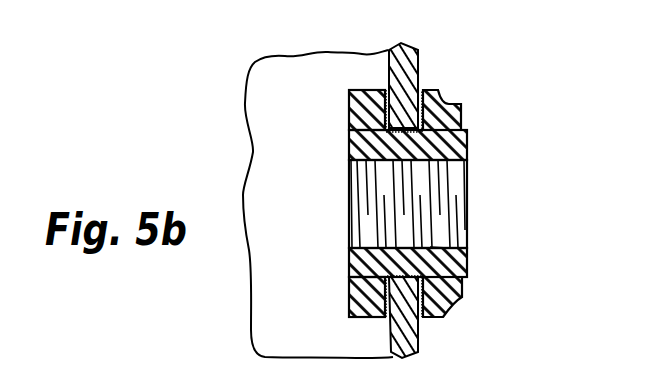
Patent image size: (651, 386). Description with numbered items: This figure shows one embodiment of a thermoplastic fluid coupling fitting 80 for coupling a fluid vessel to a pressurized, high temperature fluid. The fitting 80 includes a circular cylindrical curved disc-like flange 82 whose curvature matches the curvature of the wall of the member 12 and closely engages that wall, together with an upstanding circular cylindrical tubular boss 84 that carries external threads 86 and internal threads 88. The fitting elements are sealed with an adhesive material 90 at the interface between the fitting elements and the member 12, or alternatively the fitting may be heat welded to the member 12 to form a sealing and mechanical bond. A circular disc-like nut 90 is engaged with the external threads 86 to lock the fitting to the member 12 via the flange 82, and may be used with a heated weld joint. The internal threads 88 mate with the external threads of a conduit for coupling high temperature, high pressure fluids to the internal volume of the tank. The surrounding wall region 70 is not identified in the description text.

The member 12 is at (418, 61).
The housing 70 is at (270, 180).
The fitting 80 is at (465, 158).
The flange 82 is at (349, 120).
The tubular boss 84 is at (458, 143).
The external threads 86 is at (464, 130).
The internal threads 88 is at (430, 247).
The adhesive material 90 is at (387, 93).